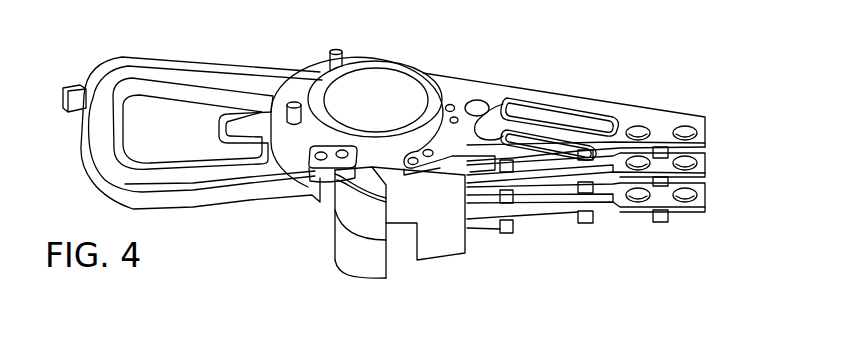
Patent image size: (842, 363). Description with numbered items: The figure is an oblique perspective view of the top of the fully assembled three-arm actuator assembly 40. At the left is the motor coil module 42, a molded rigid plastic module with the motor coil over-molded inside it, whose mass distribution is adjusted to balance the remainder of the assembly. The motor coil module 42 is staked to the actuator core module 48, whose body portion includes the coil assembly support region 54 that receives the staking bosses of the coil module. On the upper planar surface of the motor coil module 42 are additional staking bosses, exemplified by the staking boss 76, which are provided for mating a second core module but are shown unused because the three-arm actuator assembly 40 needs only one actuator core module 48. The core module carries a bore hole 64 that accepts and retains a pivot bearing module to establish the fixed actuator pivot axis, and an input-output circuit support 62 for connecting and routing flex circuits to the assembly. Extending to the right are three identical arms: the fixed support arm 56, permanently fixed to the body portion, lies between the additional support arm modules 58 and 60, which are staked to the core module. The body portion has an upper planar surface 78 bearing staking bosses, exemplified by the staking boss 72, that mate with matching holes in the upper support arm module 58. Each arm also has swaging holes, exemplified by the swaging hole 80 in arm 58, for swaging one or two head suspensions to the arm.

The three-arm actuator assembly 40 is at (520, 58).
The motor coil module 42 is at (221, 63).
The actuator core module 48 is at (318, 234).
The coil assembly support region 54 is at (408, 65).
The fixed support arm 56 is at (707, 163).
The additional support arm module 58 is at (707, 130).
The additional support arm module 60 is at (707, 196).
The input-output circuit support 62 is at (358, 281).
The bore hole 64 is at (388, 110).
The staking boss 72 is at (450, 102).
The staking boss 76 is at (338, 50).
The upper planar surface 78 is at (271, 145).
The swaging hole 80 is at (683, 125).